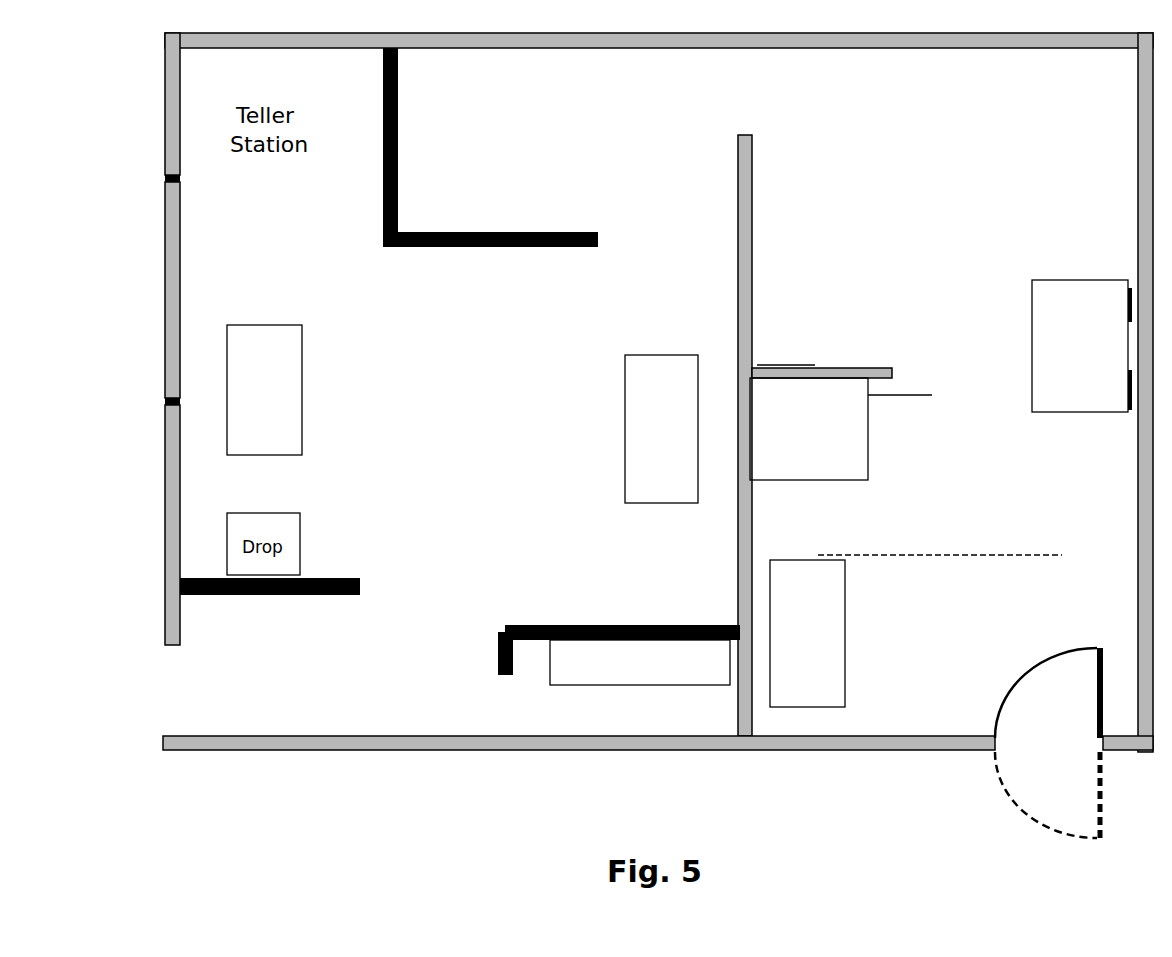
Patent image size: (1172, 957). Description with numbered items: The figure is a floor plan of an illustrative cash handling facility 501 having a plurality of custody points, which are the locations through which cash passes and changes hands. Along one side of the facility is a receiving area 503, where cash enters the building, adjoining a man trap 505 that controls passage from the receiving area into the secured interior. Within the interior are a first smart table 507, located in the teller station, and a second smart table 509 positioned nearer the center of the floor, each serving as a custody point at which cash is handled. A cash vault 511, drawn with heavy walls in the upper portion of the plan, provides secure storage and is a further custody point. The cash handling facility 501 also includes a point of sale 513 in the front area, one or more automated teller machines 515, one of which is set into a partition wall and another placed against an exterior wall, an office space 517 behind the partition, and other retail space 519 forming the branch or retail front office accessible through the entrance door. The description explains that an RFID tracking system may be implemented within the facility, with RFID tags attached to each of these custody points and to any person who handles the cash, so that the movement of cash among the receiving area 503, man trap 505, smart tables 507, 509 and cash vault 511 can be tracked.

The cash handling facility 501 is at (225, 756).
The receiving area 503 is at (228, 702).
The man trap 505 is at (222, 607).
The first smart table 507 is at (227, 445).
The second smart table 509 is at (638, 493).
The cash vault 511 is at (558, 147).
The point of sale 513 is at (830, 661).
The automated teller machine 515 is at (1032, 415).
The office space 517 is at (950, 232).
The retail space 519 is at (945, 556).